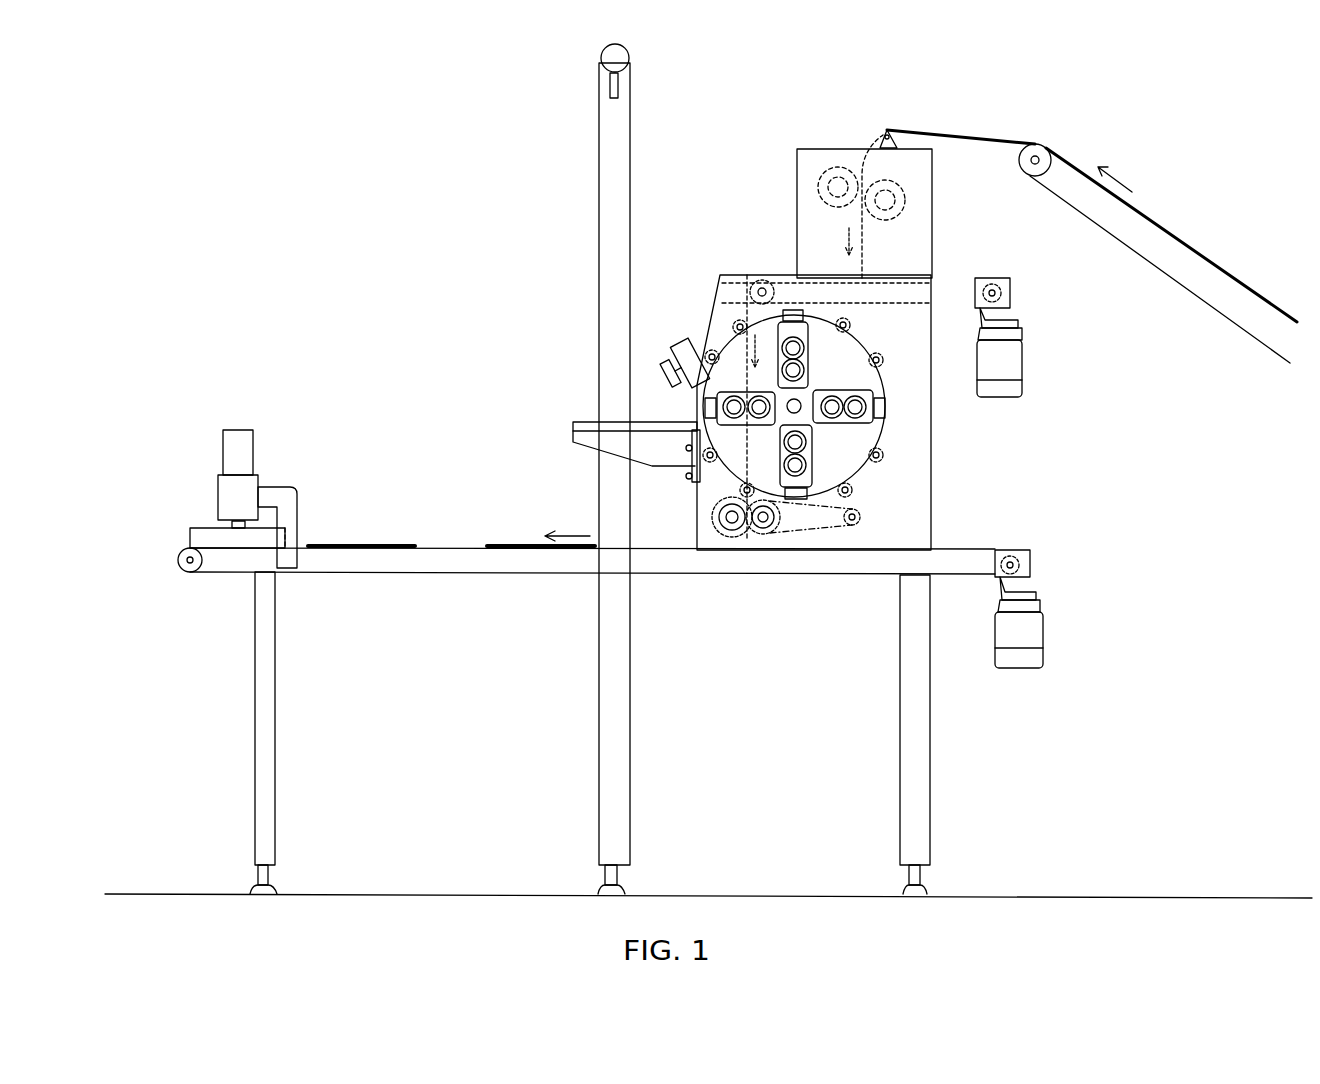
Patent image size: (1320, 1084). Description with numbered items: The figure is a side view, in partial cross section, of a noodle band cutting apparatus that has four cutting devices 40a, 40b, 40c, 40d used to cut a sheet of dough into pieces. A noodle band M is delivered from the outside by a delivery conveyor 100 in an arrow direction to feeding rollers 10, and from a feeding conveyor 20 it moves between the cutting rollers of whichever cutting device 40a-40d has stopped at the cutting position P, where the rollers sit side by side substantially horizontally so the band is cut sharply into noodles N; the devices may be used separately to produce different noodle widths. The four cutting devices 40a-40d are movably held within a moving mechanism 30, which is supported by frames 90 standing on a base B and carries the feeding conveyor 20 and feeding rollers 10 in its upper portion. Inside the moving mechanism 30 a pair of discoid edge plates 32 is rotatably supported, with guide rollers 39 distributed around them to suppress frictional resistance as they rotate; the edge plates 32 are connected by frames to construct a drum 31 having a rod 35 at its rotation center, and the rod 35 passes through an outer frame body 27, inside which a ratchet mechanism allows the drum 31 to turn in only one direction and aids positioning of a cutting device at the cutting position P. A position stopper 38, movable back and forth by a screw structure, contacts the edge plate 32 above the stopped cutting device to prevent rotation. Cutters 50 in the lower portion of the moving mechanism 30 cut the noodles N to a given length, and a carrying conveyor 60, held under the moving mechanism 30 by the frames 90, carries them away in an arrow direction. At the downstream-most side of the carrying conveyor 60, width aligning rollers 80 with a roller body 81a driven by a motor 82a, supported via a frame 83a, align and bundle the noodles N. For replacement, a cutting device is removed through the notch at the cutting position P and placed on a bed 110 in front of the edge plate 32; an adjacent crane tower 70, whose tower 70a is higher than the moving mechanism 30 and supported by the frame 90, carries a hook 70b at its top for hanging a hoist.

The feeding rollers 10 is at (828, 140).
The feeding conveyor 20 is at (769, 252).
The outer frame body 27 is at (898, 376).
The moving mechanism 30 is at (956, 441).
The drum 31 is at (906, 421).
The edge plate 32 is at (852, 453).
The rod 35 is at (800, 398).
The position stopper 38 is at (684, 352).
The guide rollers 39 is at (880, 442).
The cutting device 40a is at (741, 380).
The cutting device 40b is at (826, 462).
The cutting device 40c is at (860, 435).
The cutting device 40d is at (837, 347).
The cutters 50 is at (705, 503).
The carrying conveyor 60 is at (450, 547).
The crane tower 70 is at (615, 454).
The tower 70a is at (598, 150).
The hook 70b is at (608, 88).
The width aligning rollers 80 is at (225, 464).
The roller body 81a is at (190, 528).
The motor 82a is at (240, 428).
The frame 83a is at (298, 505).
The frames 90 is at (254, 676).
The delivery conveyor 100 is at (1147, 265).
The bed 110 is at (595, 421).
The base B is at (1104, 893).
The noodle band M is at (865, 238).
The noodles N is at (343, 546).
The cutting position P is at (691, 406).